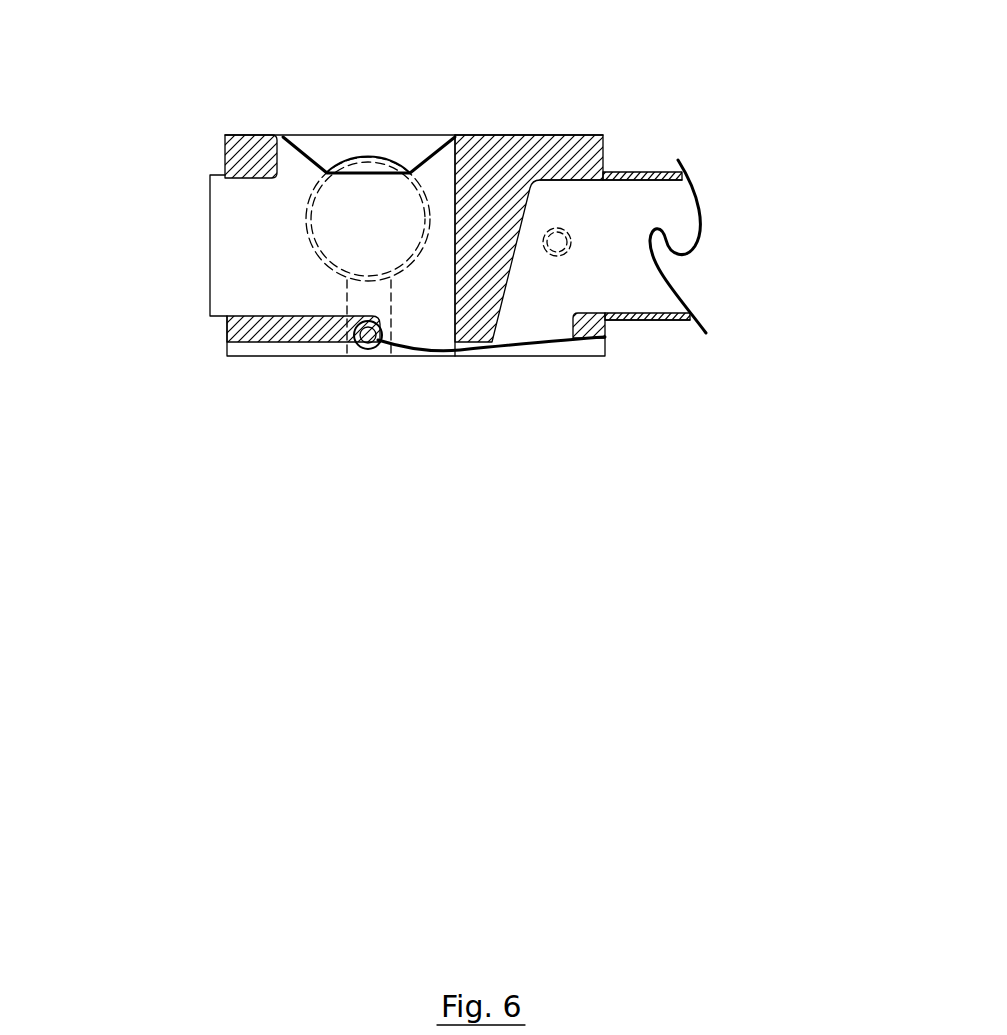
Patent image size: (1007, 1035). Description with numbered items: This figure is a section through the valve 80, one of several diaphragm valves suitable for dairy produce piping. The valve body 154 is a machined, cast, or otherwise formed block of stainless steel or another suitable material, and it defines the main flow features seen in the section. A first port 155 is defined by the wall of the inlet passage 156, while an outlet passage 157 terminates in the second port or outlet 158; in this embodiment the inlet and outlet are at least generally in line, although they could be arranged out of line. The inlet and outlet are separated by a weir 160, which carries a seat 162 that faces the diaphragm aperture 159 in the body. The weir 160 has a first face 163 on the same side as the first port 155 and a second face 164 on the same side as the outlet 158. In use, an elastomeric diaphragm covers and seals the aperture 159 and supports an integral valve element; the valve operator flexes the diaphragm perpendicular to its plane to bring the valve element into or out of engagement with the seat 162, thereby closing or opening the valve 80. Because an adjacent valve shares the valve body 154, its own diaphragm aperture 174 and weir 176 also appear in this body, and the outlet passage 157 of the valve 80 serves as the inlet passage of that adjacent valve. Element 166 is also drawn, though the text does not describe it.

The valve 80 is at (253, 408).
The valve body 154 is at (533, 135).
The first port 155 is at (705, 325).
The inlet passage 156 is at (643, 180).
The outlet passage 157 is at (297, 313).
The outlet 158 is at (210, 198).
The diaphragm aperture 159 is at (532, 312).
The weir 160 is at (587, 293).
The seat 162 is at (465, 353).
The first face 163 is at (523, 208).
The second face 164 is at (460, 272).
The spring 166 is at (497, 353).
The diaphragm aperture 174 is at (283, 137).
The weir 176 is at (317, 167).